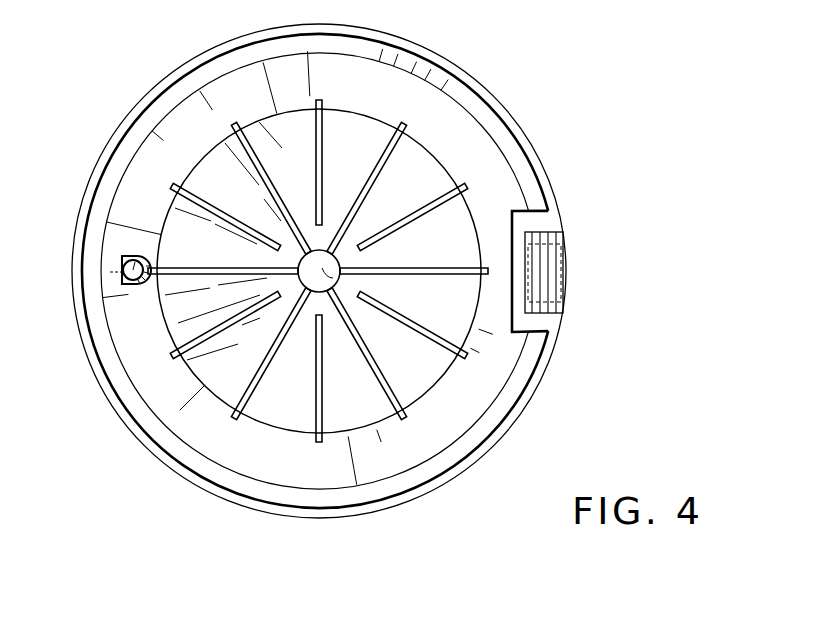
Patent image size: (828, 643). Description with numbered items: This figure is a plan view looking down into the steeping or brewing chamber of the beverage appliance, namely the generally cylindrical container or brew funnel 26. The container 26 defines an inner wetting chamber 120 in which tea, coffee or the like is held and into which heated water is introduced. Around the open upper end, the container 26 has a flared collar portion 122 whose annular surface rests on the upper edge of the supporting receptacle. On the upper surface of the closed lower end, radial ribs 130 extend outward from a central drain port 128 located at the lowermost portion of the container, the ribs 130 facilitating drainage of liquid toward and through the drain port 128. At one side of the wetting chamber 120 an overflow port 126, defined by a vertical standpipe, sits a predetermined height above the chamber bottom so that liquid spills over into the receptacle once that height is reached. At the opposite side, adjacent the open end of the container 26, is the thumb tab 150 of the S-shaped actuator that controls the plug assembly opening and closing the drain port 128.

The container or brew funnel 26 is at (579, 208).
The wetting chamber 120 is at (203, 50).
The flared collar portion 122 is at (500, 130).
The overflow port 126 is at (135, 256).
The drain port 128 is at (347, 282).
The radial ribs 130 is at (412, 215).
The thumb tab 150 is at (567, 267).